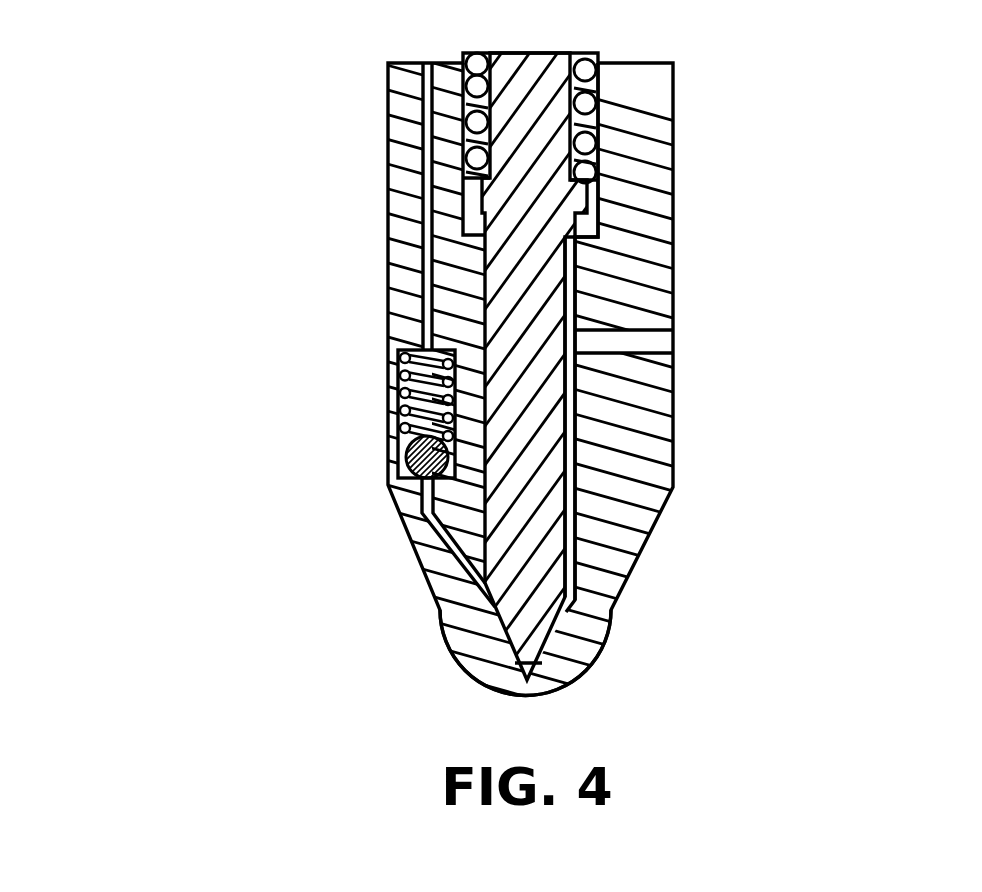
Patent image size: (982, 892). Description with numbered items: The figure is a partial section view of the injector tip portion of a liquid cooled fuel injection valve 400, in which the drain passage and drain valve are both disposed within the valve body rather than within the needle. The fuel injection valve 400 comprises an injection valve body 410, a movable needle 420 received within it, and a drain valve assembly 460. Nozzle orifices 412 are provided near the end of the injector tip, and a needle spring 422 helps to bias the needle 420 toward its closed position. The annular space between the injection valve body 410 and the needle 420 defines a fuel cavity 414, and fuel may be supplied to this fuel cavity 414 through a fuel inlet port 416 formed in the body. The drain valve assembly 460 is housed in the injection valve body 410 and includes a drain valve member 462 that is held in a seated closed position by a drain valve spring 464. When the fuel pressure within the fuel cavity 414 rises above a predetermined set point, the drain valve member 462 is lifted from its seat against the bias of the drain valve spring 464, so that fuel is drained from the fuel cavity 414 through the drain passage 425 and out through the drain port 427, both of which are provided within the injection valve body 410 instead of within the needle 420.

The fuel injection valve 400 is at (250, 97).
The injection valve body 410 is at (633, 240).
The nozzle orifices 412 is at (597, 628).
The fuel cavity 414 is at (568, 523).
The fuel inlet port 416 is at (615, 342).
The movable needle 420 is at (540, 467).
The needle spring 422 is at (590, 103).
The drain passage 425 is at (435, 545).
The drain port 427 is at (430, 282).
The drain valve assembly 460 is at (320, 345).
The drain valve member 462 is at (405, 447).
The drain valve spring 464 is at (400, 412).